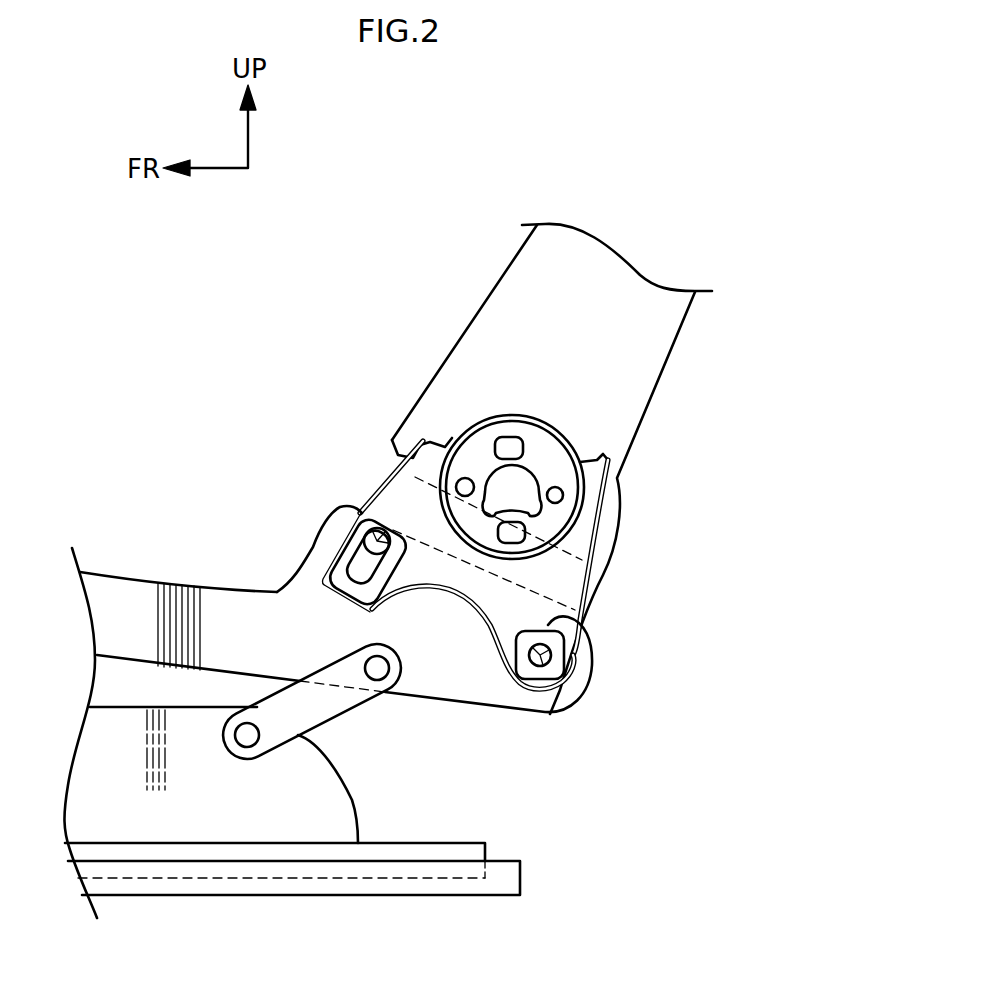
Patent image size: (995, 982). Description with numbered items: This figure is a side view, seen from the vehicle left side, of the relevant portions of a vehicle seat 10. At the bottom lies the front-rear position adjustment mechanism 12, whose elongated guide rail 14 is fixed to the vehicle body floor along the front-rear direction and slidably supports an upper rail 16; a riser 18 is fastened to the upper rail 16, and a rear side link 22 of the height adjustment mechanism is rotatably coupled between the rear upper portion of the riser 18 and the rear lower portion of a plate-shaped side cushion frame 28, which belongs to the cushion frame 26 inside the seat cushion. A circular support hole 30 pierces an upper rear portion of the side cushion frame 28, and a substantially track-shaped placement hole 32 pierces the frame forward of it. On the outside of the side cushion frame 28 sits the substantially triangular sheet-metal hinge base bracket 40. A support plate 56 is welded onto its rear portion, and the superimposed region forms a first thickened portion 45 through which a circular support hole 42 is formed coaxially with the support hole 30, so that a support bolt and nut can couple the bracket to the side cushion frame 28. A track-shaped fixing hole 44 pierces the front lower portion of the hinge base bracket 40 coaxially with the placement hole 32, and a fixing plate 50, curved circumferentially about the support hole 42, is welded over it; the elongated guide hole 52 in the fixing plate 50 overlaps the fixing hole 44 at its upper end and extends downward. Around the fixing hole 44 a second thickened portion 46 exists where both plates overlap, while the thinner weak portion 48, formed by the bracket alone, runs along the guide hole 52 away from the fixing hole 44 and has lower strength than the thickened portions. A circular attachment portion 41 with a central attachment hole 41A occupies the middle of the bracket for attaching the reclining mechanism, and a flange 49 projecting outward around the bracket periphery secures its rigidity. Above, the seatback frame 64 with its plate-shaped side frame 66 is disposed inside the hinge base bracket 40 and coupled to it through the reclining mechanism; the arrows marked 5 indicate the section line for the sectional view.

The section line of FIG. 5 is at (402, 498).
The vehicle seat 10 is at (415, 183).
The front-rear position adjustment mechanism 12 is at (558, 887).
The guide rail 14 is at (497, 896).
The upper rail 16 is at (485, 843).
The riser 18 is at (358, 815).
The rear side link 22 is at (352, 712).
The cushion frame 26 is at (557, 722).
The side cushion frame 28 is at (468, 705).
The support hole 30 is at (557, 648).
The placement hole 32 is at (385, 522).
The hinge base bracket 40 is at (590, 442).
The attachment portion 41 is at (580, 506).
The attachment hole 41A is at (497, 473).
The support hole 42 is at (545, 660).
The fixing hole 44 is at (345, 530).
The first thickened portion 45 is at (552, 680).
The second thickened portion 46 is at (377, 530).
The weak portion 48 is at (365, 562).
The flange 49 is at (413, 455).
The fixing plate 50 is at (412, 560).
The guide hole 52 is at (333, 583).
The support plate 56 is at (563, 632).
The seatback frame 64 is at (695, 330).
The side frame 66 is at (676, 361).